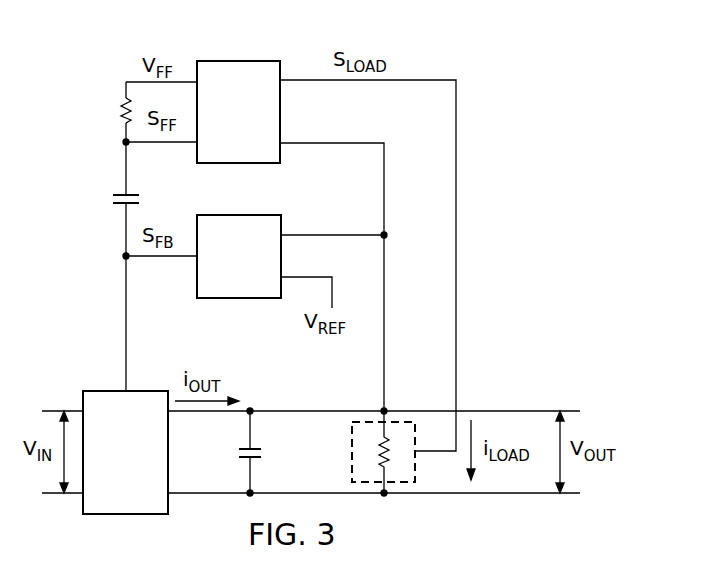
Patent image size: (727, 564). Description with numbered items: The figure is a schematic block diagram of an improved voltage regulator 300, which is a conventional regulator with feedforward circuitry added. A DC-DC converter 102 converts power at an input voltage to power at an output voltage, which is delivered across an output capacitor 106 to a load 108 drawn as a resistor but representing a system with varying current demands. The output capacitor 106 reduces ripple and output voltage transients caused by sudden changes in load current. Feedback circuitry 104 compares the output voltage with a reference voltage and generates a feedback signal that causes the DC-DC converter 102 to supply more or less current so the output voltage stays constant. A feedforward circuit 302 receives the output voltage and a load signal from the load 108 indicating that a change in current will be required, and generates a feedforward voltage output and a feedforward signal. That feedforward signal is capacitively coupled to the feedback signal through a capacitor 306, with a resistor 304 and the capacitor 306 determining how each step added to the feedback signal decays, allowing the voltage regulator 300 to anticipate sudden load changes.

The voltage regulator 300 is at (530, 62).
The feedforward circuit 302 is at (238, 112).
The resistor 304 is at (122, 105).
The capacitor 306 is at (118, 197).
The feedback circuitry 104 is at (239, 256).
The DC-DC converter 102 is at (125, 452).
The output capacitor 106 is at (262, 453).
The load 108 is at (350, 450).